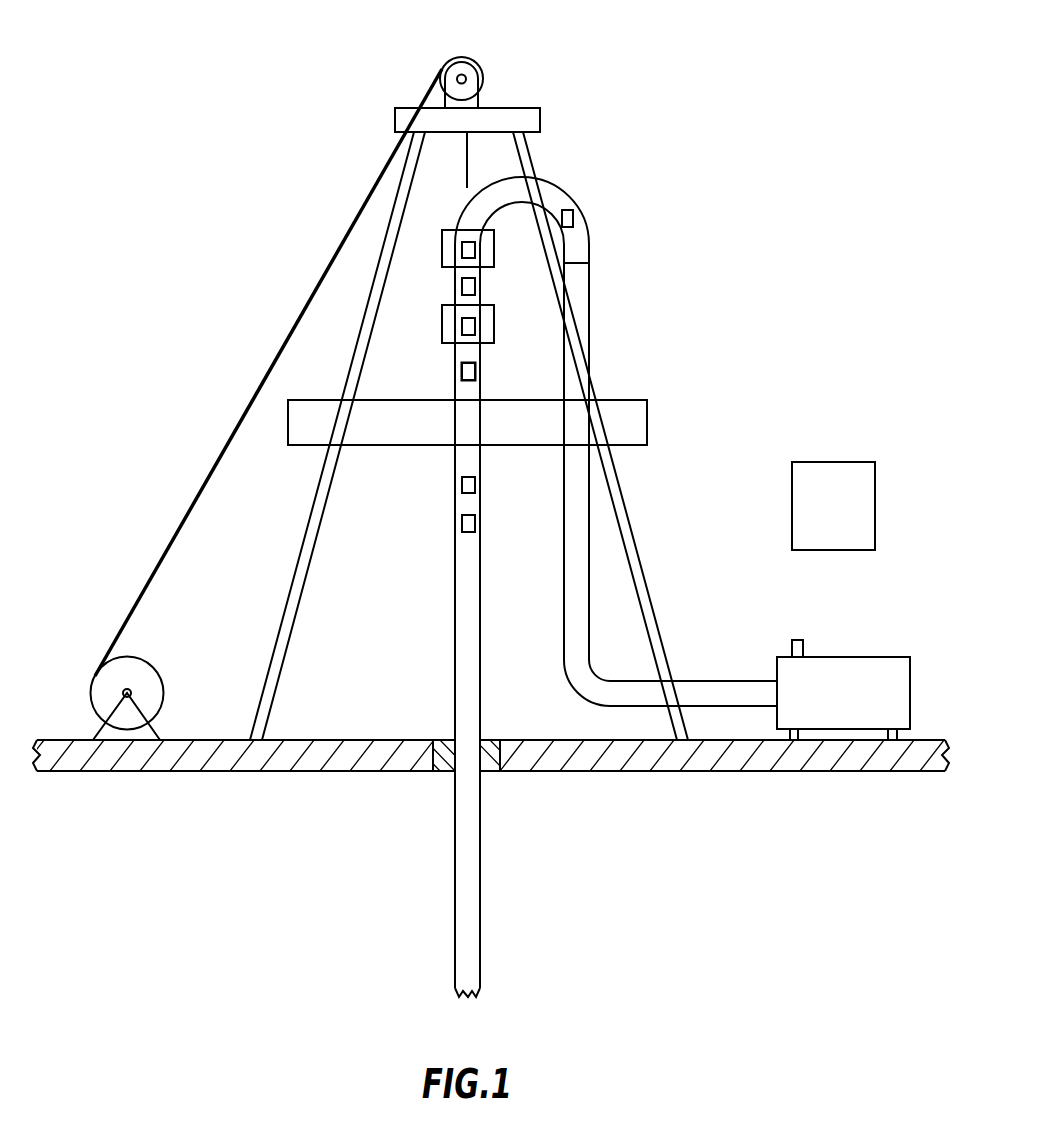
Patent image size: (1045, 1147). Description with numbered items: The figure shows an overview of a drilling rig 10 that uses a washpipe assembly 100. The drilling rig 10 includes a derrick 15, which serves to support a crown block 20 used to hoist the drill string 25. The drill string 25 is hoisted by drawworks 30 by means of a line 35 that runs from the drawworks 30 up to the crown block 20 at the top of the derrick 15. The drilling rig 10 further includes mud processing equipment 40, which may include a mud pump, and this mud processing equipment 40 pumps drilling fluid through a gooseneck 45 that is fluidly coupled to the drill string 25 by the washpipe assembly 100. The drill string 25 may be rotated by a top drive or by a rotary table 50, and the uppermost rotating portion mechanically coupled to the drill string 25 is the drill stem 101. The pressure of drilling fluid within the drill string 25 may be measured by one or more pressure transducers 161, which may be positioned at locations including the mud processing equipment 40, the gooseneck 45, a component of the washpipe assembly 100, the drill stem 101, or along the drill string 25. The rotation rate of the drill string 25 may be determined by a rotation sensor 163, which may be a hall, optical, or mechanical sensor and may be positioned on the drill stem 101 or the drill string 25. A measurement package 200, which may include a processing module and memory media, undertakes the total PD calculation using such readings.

The drilling rig 10 is at (152, 224).
The derrick 15 is at (528, 150).
The crown block 20 is at (480, 62).
The drill string 25 is at (455, 642).
The drawworks 30 is at (148, 660).
The line 35 is at (186, 518).
The mud processing equipment 40 is at (868, 657).
The gooseneck 45 is at (580, 238).
The rotary table 50 is at (442, 775).
The washpipe assembly 100 is at (422, 274).
The drill stem 101 is at (476, 372).
The pressure transducer 161 is at (442, 240).
The rotation sensor 163 is at (442, 323).
The measurement package 200 is at (853, 517).